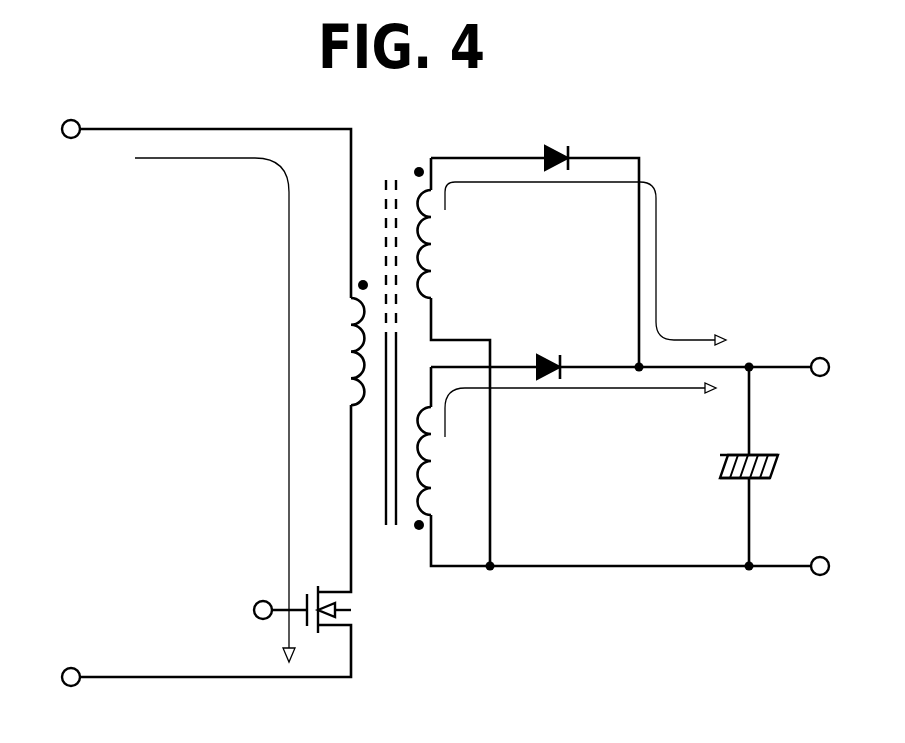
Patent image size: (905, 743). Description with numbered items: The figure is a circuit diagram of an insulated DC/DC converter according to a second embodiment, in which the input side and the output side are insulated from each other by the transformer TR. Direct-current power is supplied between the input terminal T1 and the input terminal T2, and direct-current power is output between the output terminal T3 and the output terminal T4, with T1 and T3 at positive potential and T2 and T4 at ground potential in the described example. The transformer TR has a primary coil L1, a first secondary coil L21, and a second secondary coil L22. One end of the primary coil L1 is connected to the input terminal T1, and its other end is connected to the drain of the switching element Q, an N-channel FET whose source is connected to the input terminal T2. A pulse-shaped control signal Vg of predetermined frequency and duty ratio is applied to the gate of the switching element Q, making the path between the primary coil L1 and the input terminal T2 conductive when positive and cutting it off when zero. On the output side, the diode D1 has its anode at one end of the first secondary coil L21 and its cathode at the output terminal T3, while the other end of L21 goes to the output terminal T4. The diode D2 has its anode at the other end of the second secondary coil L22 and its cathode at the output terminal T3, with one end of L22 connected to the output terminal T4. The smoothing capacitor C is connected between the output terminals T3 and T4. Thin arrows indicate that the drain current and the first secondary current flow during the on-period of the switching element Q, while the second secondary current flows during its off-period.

The input terminal T1 is at (50, 129).
The input terminal T2 is at (50, 676).
The output terminal T3 is at (844, 367).
The output terminal T4 is at (844, 567).
The transformer TR is at (391, 316).
The primary coil L1 is at (341, 351).
The first secondary coil L21 is at (447, 244).
The second secondary coil L22 is at (446, 461).
The diode D1 is at (560, 139).
The diode D2 is at (547, 350).
The switching element Q is at (345, 609).
The control signal Vg is at (264, 611).
The smoothing capacitor C is at (764, 469).